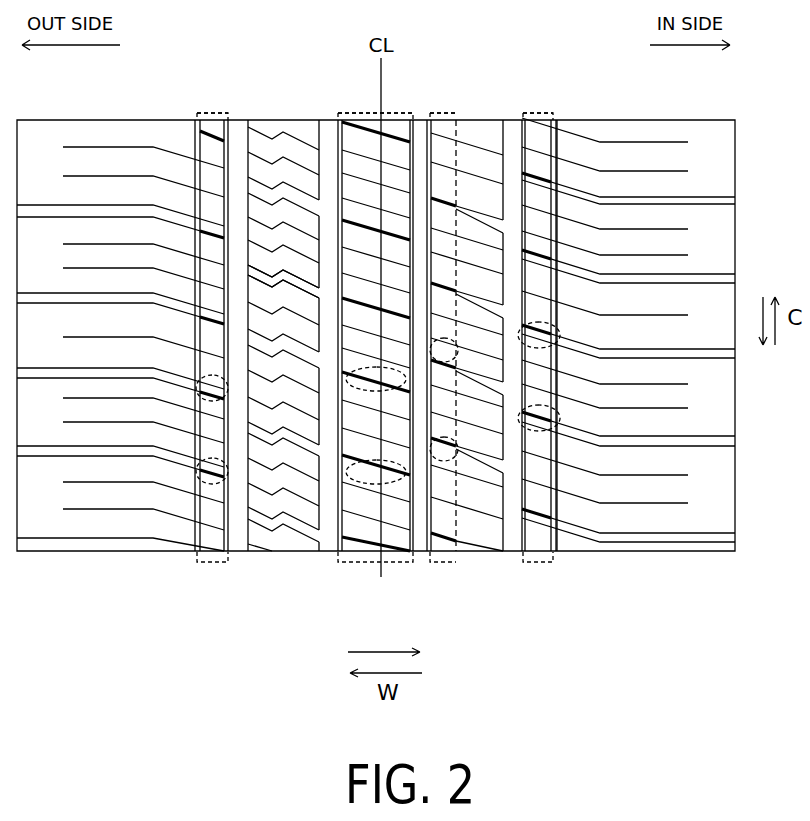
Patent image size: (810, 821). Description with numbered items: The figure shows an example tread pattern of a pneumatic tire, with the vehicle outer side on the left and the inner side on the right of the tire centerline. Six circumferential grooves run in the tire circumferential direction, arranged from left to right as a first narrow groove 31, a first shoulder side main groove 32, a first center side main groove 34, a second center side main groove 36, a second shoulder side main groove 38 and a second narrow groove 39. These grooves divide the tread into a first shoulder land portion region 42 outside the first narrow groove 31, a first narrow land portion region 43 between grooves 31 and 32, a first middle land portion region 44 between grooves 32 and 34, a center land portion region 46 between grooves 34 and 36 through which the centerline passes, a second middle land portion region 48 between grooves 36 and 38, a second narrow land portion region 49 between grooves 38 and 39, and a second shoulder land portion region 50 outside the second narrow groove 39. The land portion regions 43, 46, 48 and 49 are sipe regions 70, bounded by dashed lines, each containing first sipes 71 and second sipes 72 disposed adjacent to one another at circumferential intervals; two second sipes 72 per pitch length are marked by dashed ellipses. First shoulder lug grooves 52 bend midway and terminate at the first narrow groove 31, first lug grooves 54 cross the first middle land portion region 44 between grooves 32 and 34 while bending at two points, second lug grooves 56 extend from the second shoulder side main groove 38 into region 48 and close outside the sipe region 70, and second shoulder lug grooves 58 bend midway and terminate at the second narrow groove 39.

The first narrow groove 31 is at (198, 553).
The first shoulder side main groove 32 is at (238, 552).
The first center side main groove 34 is at (330, 552).
The second center side main groove 36 is at (420, 552).
The second shoulder side main groove 38 is at (513, 540).
The second narrow groove 39 is at (555, 540).
The first shoulder land portion region 42 is at (130, 130).
The first narrow land portion region 43 is at (215, 124).
The first middle land portion region 44 is at (300, 130).
The center land portion region 46 is at (360, 130).
The second middle land portion region 48 is at (465, 128).
The second narrow land portion region 49 is at (540, 125).
The second shoulder land portion region 50 is at (625, 128).
The first shoulder lug groove 52 is at (132, 457).
The first lug groove 54 is at (295, 535).
The second lug groove 56 is at (487, 503).
The second shoulder lug groove 58 is at (638, 540).
The sipe region 70 is at (220, 116).
The first sipe 71 is at (68, 512).
The second sipe 72 is at (222, 488).